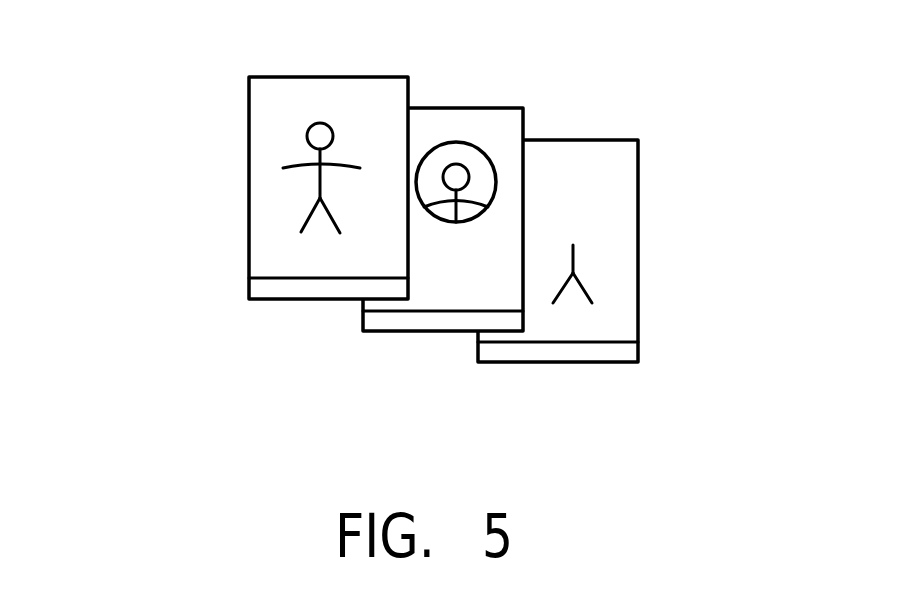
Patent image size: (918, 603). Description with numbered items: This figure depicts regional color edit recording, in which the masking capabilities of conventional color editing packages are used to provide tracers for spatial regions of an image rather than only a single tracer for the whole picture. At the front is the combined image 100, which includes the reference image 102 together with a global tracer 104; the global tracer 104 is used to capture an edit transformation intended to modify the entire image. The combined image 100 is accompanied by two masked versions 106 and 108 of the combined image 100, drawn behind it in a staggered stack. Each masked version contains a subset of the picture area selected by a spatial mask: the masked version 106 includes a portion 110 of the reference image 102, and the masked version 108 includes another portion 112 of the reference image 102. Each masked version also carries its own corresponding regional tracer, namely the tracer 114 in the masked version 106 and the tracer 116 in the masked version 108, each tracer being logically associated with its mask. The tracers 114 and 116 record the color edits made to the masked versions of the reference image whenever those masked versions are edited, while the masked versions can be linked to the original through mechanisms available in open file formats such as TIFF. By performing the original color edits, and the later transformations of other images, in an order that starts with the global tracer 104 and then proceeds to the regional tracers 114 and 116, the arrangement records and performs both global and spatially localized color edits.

The combined image 100 is at (423, 202).
The reference image 102 is at (333, 130).
The global tracer 104 is at (248, 293).
The masked version 106 is at (469, 187).
The masked version 108 is at (595, 219).
The portion of the reference image 110 is at (456, 223).
The portion of the reference image 112 is at (575, 253).
The tracer 114 is at (363, 320).
The tracer 116 is at (478, 352).